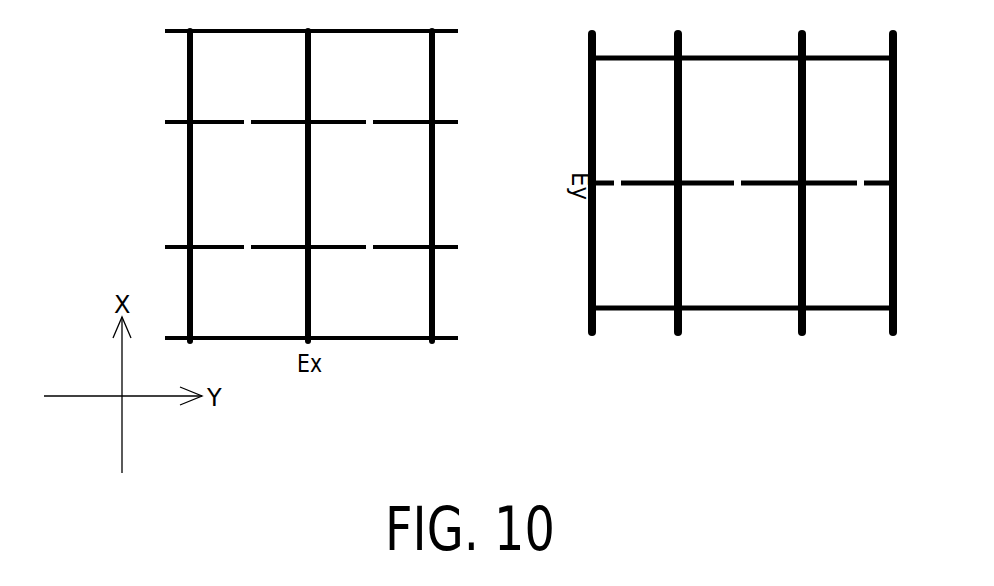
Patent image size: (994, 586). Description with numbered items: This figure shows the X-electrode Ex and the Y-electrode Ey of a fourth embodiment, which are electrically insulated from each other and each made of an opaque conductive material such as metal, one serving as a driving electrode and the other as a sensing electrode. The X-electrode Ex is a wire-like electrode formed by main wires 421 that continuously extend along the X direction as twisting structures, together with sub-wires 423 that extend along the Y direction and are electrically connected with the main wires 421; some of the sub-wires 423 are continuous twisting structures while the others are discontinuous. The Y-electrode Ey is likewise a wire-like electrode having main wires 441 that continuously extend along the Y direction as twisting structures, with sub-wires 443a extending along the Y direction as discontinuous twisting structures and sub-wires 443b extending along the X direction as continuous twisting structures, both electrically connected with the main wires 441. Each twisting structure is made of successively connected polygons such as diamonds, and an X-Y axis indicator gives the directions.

The main wire 421 is at (188, 58).
The sub-wire 423 is at (171, 123).
The main wire 441 is at (621, 57).
The sub-wire 443a is at (621, 182).
The sub-wire 443b is at (589, 78).